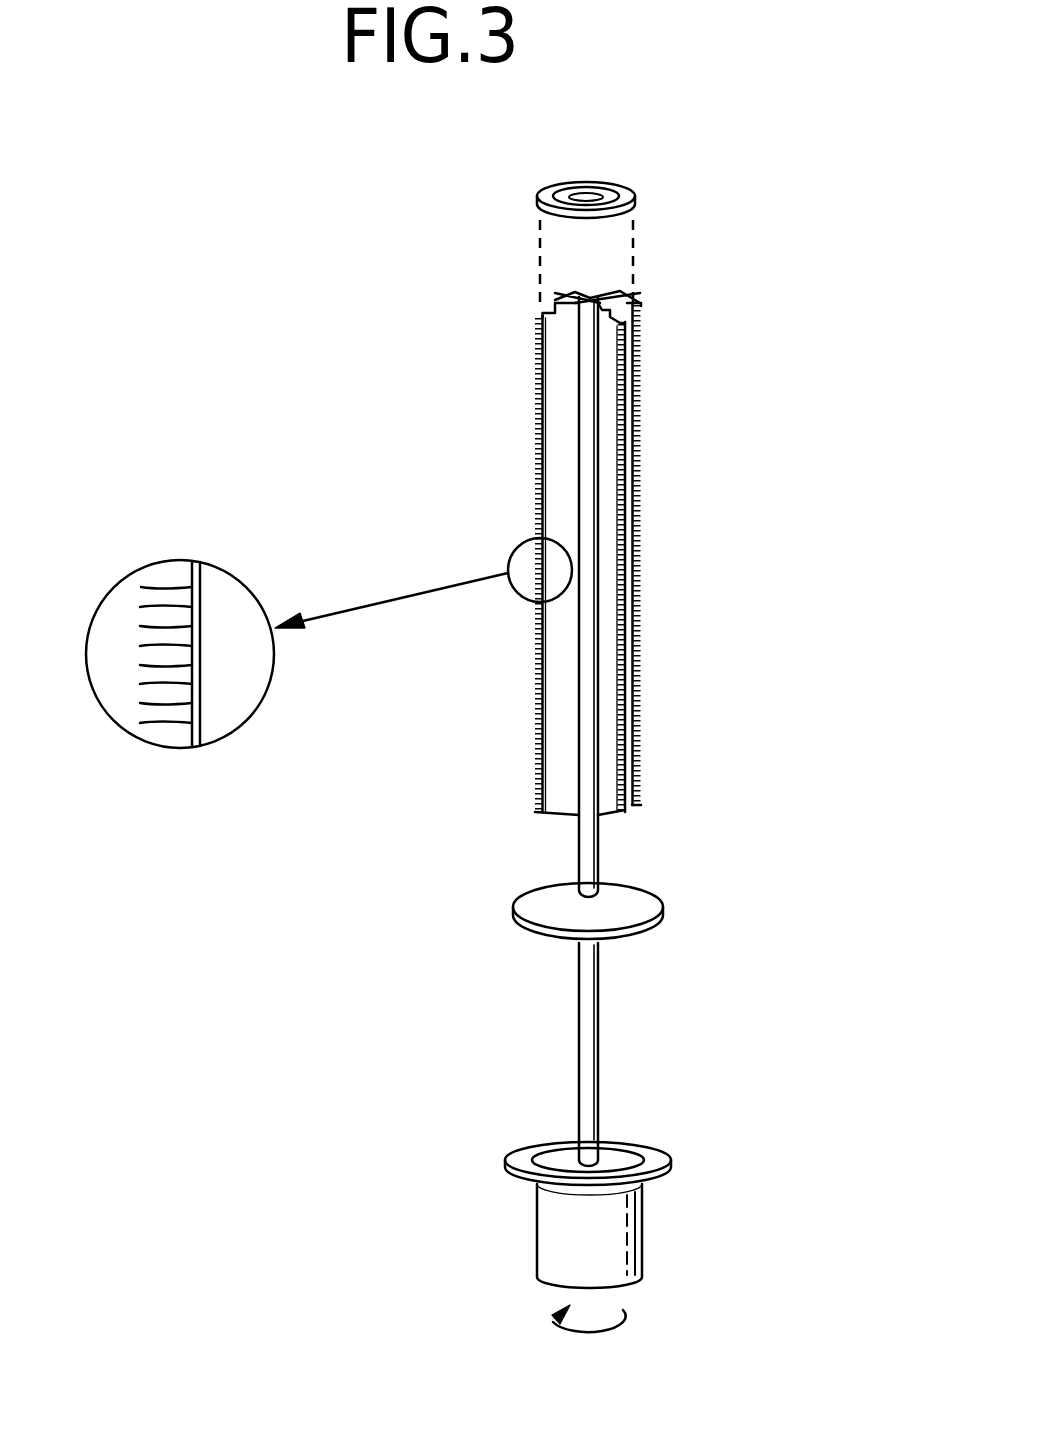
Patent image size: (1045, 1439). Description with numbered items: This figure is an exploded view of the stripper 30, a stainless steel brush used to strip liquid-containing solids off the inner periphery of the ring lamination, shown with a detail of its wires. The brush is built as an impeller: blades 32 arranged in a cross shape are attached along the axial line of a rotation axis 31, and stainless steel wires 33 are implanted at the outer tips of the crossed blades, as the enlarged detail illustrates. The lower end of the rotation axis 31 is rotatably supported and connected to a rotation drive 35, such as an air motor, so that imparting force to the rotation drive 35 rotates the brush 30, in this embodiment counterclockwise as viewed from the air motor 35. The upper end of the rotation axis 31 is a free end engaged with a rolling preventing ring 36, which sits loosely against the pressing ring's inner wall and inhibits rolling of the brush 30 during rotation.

The stripper 30 is at (730, 407).
The rotation axis 31 is at (597, 850).
The blades 32 is at (628, 510).
The stainless steel wires 33 is at (163, 725).
The rotation drive 35 is at (550, 1235).
The rolling preventing ring 36 is at (636, 197).